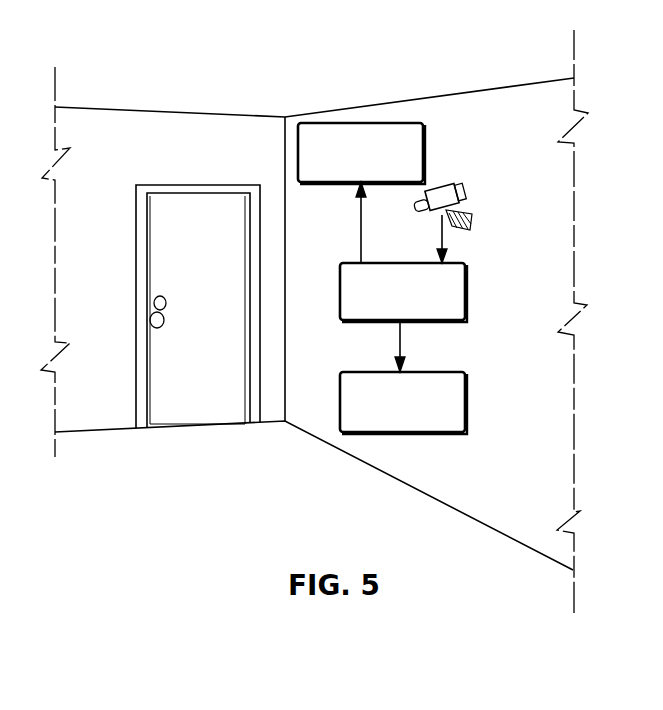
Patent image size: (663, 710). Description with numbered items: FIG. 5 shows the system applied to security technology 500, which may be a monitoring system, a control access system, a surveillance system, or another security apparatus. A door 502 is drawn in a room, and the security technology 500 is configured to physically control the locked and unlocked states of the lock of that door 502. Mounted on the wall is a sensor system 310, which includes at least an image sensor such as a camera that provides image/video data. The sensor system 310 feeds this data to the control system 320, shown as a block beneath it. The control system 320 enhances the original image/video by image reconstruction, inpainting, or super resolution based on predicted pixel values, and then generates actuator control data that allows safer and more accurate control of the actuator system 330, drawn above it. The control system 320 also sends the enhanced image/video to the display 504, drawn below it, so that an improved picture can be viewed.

The security technology 500 is at (458, 60).
The door 502 is at (215, 283).
The actuator system 330 is at (423, 153).
The sensor system 310 is at (462, 192).
The control system 320 is at (465, 290).
The display 504 is at (465, 402).